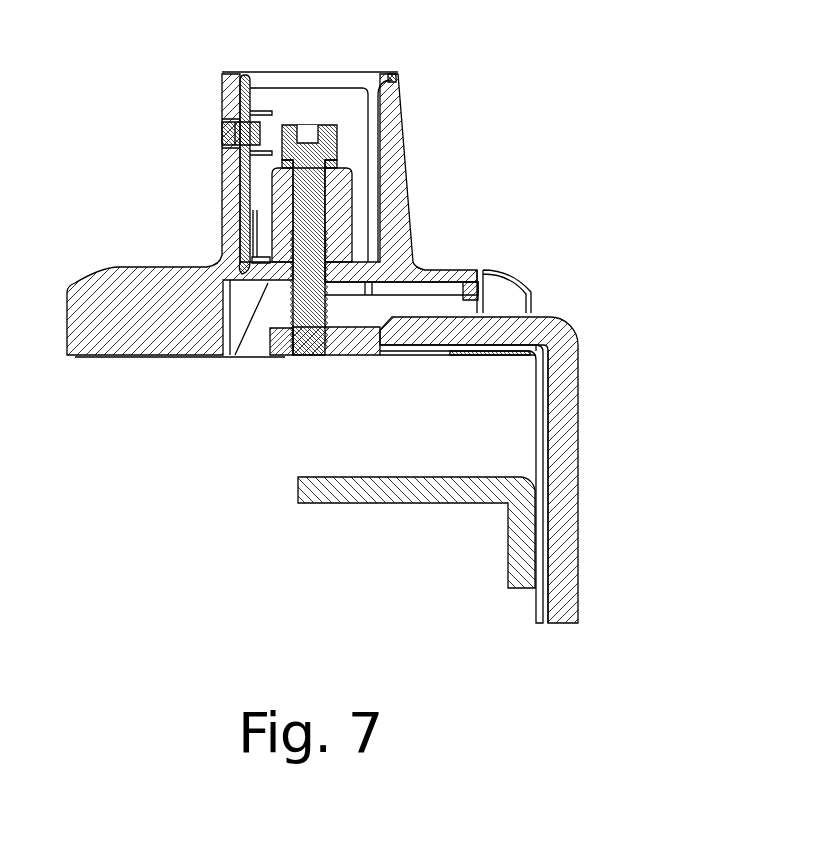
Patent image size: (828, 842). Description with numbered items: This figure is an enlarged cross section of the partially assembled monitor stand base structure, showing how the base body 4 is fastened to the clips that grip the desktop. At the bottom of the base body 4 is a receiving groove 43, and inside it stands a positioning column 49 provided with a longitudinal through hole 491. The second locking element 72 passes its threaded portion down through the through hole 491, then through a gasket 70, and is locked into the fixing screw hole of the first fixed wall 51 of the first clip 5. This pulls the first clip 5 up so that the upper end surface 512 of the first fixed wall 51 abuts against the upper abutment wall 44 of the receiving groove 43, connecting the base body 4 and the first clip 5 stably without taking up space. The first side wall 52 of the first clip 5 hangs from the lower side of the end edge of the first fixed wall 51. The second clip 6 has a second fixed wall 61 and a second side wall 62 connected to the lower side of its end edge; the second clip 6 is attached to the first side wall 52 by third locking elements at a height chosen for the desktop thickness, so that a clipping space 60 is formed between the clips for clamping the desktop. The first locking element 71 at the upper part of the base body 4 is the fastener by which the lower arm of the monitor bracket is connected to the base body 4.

The base body 4 is at (413, 254).
The receiving groove 43 is at (423, 303).
The upper abutment wall 44 is at (493, 313).
The positioning column 49 is at (348, 203).
The longitudinal through hole 491 is at (352, 167).
The first clip 5 is at (530, 470).
The first fixed wall 51 is at (453, 328).
The upper end surface 512 is at (515, 317).
The first side wall 52 is at (578, 505).
The second clip 6 is at (411, 567).
The clipping space 60 is at (353, 427).
The second fixed wall 61 is at (360, 505).
The second side wall 62 is at (481, 556).
The gasket 70 is at (238, 166).
The first locking element 71 is at (222, 133).
The second locking element 72 is at (332, 127).